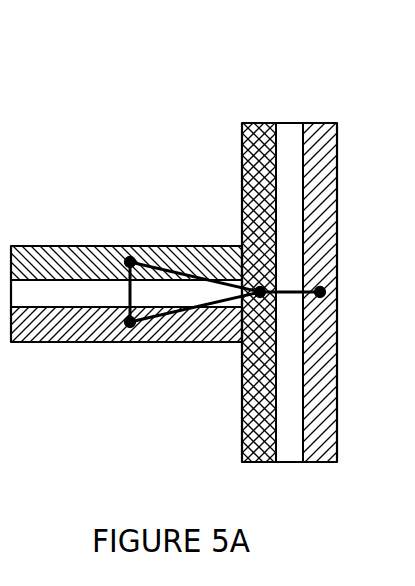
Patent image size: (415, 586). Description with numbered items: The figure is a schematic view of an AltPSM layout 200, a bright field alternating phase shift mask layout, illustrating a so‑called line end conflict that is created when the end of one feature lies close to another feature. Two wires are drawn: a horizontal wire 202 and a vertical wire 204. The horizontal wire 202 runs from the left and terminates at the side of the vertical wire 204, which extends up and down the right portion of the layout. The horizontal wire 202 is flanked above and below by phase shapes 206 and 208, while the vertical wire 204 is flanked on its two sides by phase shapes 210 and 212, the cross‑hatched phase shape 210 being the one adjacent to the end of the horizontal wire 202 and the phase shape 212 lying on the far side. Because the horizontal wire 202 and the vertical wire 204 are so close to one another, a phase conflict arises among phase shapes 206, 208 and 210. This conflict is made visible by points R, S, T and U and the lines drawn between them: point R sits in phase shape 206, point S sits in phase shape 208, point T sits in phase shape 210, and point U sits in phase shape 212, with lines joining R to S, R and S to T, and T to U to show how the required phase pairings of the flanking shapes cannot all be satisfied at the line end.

The AltPSM layout 200 is at (56, 106).
The horizontal wire 202 is at (62, 330).
The vertical wire 204 is at (282, 208).
The phase shape 206 is at (22, 246).
The phase shape 208 is at (39, 324).
The phase shape 210 is at (245, 130).
The phase shape 212 is at (330, 150).
The point R is at (128, 246).
The point S is at (130, 336).
The point T is at (222, 333).
The point U is at (323, 297).